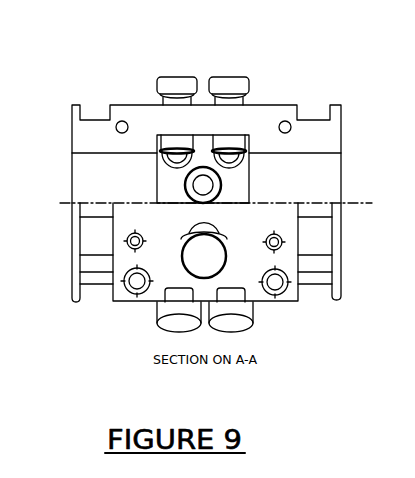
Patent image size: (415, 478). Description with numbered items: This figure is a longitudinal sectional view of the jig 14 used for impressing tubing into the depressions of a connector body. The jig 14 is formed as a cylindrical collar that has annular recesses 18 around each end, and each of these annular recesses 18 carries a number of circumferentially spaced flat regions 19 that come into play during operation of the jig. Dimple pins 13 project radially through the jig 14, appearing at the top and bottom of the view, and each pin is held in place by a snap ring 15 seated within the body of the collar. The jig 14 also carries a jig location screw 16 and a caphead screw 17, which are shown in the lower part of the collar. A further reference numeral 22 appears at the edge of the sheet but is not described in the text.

The jig 14 is at (137, 113).
The dimple pins 13 is at (232, 75).
The snap rings 15 is at (240, 148).
The jig location screw 16 is at (126, 241).
The caphead screw 17 is at (124, 281).
The annular recesses 18 is at (97, 291).
The flat regions 19 is at (320, 287).
The mounting plate 22 is at (414, 382).